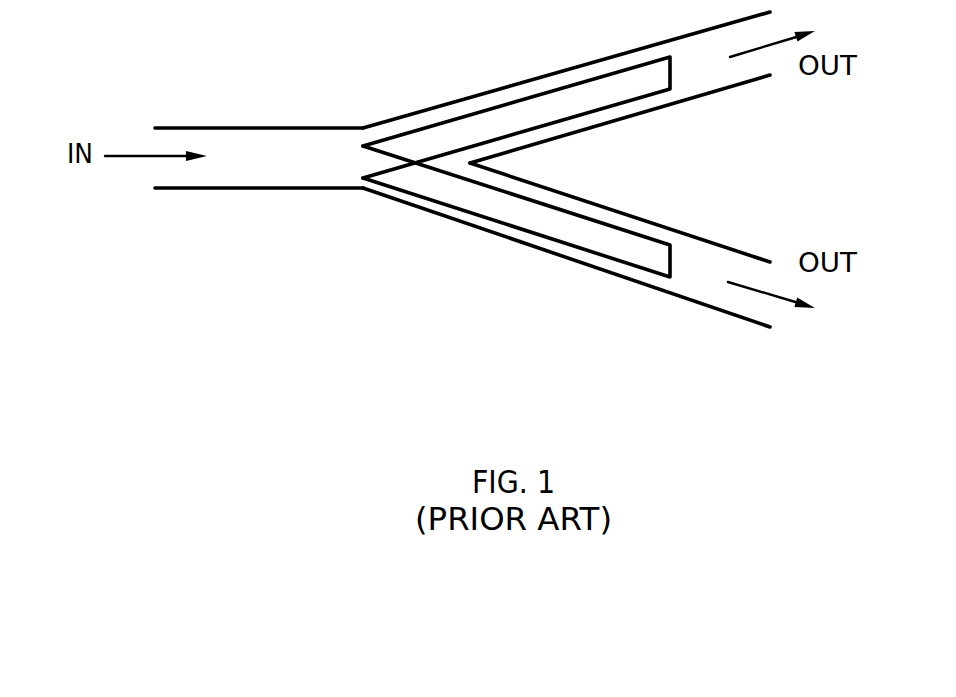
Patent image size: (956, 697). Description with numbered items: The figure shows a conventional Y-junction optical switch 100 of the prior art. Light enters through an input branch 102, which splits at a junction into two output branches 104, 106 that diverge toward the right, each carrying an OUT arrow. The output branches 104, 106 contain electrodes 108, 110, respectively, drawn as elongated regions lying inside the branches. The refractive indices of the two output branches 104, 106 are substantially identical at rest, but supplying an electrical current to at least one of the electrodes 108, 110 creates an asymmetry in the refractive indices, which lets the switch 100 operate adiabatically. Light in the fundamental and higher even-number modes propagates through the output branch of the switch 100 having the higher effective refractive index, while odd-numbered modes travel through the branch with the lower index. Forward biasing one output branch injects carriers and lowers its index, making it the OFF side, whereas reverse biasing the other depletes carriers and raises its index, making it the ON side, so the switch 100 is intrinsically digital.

The Y-junction optical switch 100 is at (462, 176).
The input branch 102 is at (242, 188).
The output branch 104 is at (710, 95).
The output branch 106 is at (670, 295).
The electrode 108 is at (537, 103).
The electrode 110 is at (523, 219).